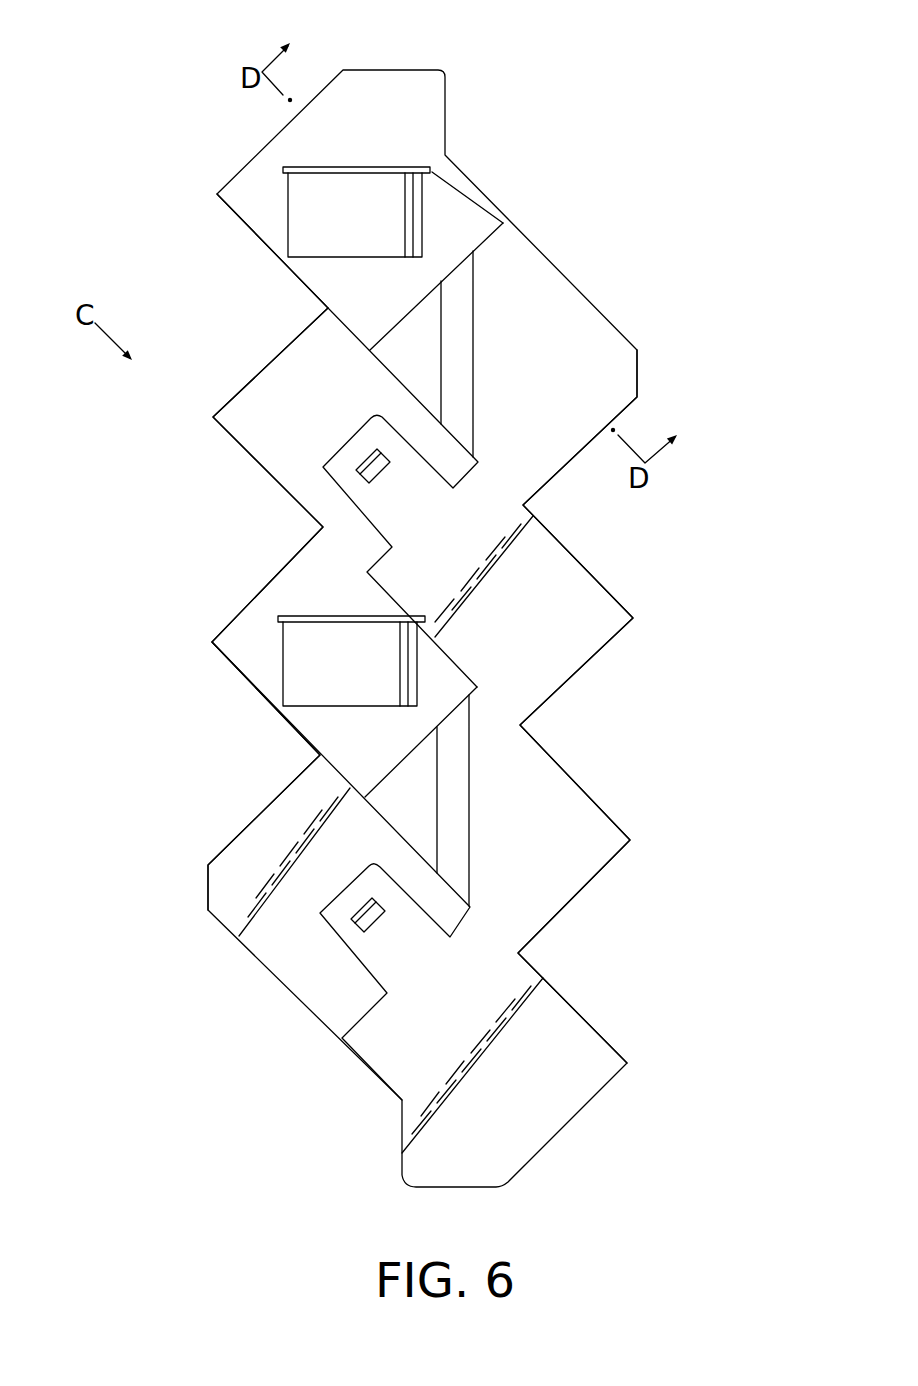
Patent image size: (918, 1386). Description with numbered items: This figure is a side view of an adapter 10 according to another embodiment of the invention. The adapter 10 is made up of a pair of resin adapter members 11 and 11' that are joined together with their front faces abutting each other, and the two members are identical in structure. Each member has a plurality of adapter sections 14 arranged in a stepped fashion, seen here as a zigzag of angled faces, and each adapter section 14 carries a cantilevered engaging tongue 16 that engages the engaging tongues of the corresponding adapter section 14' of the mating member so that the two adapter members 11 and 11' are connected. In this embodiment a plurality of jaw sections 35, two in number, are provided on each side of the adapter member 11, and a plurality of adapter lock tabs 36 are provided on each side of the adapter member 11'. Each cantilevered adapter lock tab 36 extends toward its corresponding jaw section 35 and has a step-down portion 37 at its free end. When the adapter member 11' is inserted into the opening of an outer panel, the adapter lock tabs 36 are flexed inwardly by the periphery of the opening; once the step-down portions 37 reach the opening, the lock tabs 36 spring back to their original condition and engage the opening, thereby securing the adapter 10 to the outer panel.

The adapter 10 is at (640, 330).
The adapter member 11 is at (628, 706).
The adapter member 11' is at (230, 609).
The adapter section 14 is at (436, 809).
The adapter section 14' is at (329, 551).
The first cantilevered engaging tongue 16 is at (355, 483).
The jaw section 35 is at (453, 330).
The adapter lock tab 36 is at (377, 190).
The step-down portion 37 is at (420, 225).